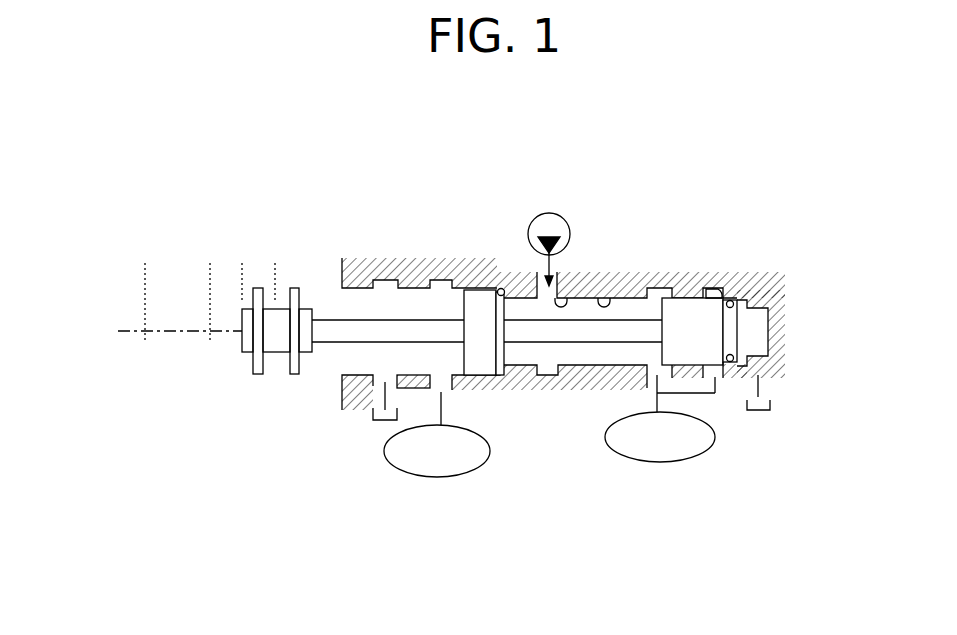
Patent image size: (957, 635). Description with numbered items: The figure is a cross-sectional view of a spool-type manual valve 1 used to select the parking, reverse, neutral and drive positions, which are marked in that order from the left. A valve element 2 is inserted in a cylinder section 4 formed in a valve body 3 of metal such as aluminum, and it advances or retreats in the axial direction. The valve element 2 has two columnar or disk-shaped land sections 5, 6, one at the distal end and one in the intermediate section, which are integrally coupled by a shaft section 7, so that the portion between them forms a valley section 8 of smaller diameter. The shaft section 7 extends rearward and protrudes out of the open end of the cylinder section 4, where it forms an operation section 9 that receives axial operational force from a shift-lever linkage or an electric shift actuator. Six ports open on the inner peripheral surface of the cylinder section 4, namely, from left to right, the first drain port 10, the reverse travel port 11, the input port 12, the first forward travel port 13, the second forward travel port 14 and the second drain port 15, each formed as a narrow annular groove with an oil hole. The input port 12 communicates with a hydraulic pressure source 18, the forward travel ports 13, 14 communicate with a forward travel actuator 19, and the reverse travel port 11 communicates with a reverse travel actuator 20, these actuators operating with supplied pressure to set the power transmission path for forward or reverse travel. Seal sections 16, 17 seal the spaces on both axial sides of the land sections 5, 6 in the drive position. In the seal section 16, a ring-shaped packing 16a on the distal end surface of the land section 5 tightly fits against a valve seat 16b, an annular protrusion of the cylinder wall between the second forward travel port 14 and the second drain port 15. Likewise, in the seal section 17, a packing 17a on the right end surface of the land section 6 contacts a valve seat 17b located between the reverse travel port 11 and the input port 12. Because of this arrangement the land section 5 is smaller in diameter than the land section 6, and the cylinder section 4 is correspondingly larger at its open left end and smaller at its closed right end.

The manual valve 1 is at (372, 192).
The valve element 2 is at (473, 321).
The valve body 3 is at (563, 292).
The cylinder section 4 is at (615, 298).
The land section 5 is at (682, 313).
The land section 6 is at (453, 321).
The shaft section 7 is at (332, 320).
The valley section 8 is at (643, 360).
The operation section 9 is at (253, 360).
The first drain port 10 is at (377, 382).
The reverse travel port 11 is at (447, 375).
The input port 12 is at (577, 302).
The first forward travel port 13 is at (648, 373).
The second forward travel port 14 is at (722, 373).
The second drain port 15 is at (773, 357).
The seal section 16 is at (736, 272).
The packing 16a is at (712, 287).
The valve seat 16b is at (742, 295).
The seal section 17 is at (497, 288).
The packing 17a is at (498, 290).
The valve seat 17b is at (505, 295).
The hydraulic pressure source 18 is at (549, 213).
The forward travel actuator 19 is at (653, 462).
The reverse travel actuator 20 is at (423, 477).